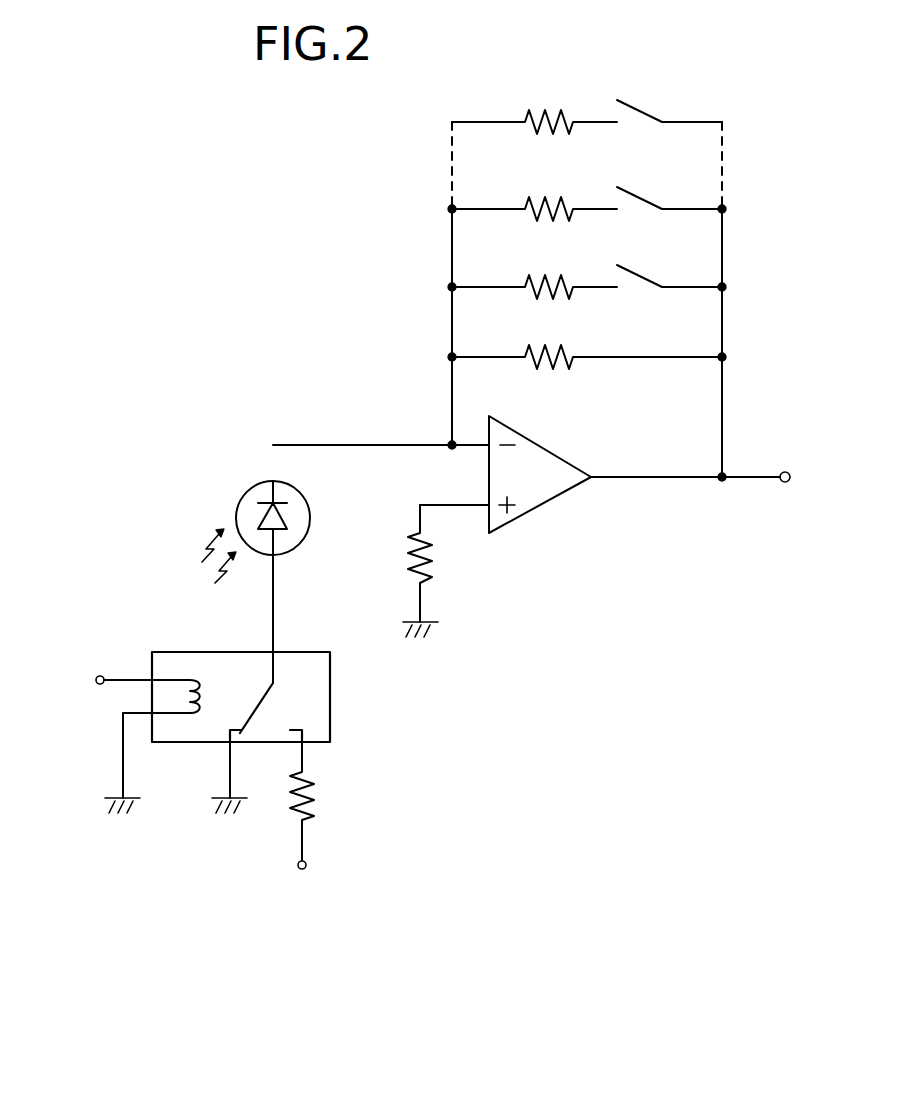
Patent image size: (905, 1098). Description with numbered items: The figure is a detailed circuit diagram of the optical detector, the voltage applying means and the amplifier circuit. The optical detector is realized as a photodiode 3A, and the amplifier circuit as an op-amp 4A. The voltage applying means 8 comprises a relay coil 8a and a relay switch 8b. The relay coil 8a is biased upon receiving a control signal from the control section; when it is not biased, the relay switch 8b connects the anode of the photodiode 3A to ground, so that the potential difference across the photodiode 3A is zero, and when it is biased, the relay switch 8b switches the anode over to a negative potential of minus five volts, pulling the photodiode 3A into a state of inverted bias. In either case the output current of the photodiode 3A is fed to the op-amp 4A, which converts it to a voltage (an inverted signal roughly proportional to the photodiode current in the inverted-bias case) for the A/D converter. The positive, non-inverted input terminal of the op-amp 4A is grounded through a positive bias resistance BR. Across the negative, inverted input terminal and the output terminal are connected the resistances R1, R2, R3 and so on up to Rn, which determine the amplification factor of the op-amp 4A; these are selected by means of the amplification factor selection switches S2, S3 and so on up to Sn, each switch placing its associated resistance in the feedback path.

The photodiode 3A is at (260, 487).
The op-amp 4A is at (567, 493).
The voltage applying means 8 is at (213, 752).
The relay coil 8a is at (196, 682).
The relay switch 8b is at (355, 920).
The positive bias resistance BR is at (410, 556).
The resistance R1 is at (546, 369).
The resistance R2 is at (546, 299).
The resistance R3 is at (546, 221).
The resistance Rn is at (546, 134).
The amplification factor selection switch S2 is at (644, 299).
The amplification factor selection switch S3 is at (644, 221).
The amplification factor selection switch Sn is at (644, 134).